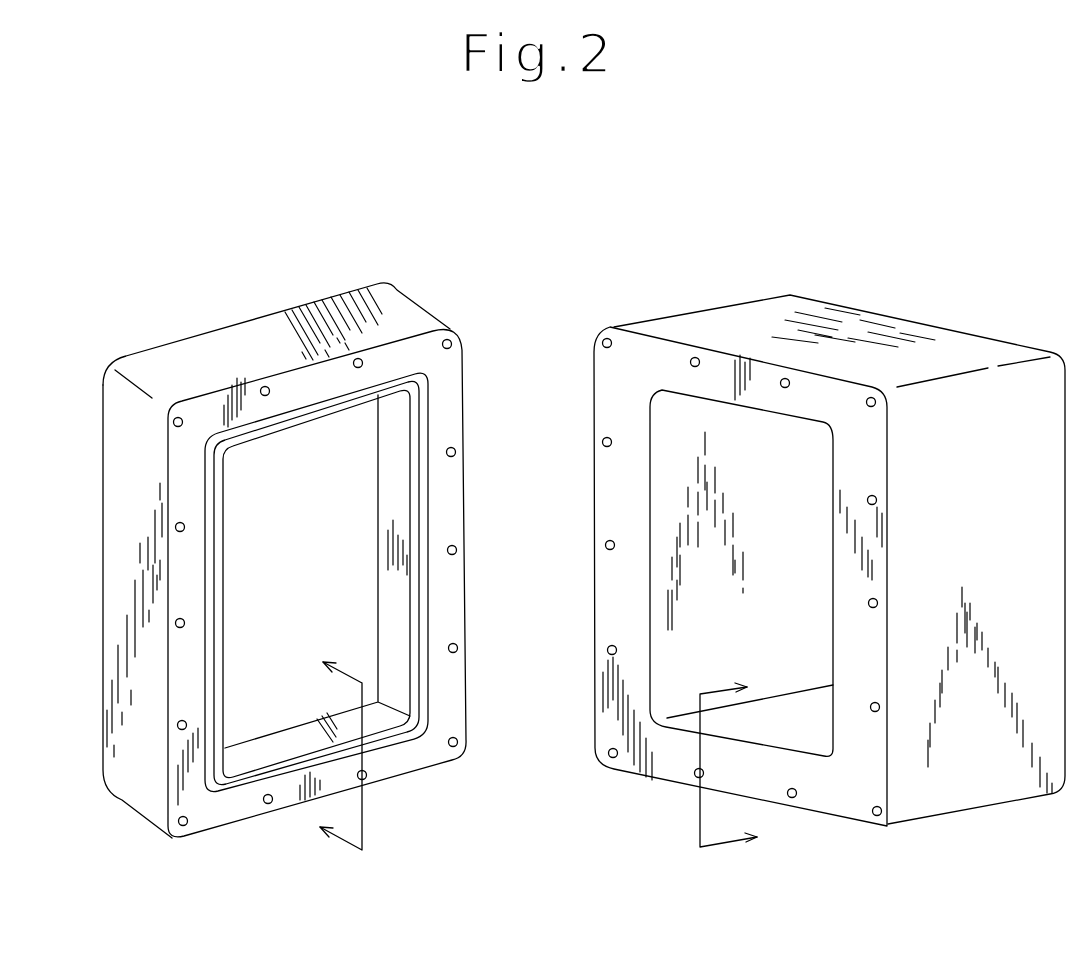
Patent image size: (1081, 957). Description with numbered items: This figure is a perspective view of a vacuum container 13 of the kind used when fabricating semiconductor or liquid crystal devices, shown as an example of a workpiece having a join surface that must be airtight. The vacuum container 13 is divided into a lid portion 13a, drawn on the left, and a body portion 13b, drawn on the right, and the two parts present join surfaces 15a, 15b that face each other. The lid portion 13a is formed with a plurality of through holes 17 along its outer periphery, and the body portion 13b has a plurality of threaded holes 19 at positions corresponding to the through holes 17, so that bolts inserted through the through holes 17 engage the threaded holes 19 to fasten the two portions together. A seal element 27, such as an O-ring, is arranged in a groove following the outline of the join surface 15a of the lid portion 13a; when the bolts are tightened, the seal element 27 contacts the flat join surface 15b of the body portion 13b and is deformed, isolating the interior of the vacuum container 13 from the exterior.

The vacuum container 13 is at (647, 237).
The lid portion 13a is at (413, 316).
The body portion 13b is at (680, 317).
The join surface 15a is at (453, 422).
The join surface 15b is at (612, 417).
The through holes 17 is at (452, 338).
The threaded holes 19 is at (603, 338).
The seal element 27 is at (430, 520).